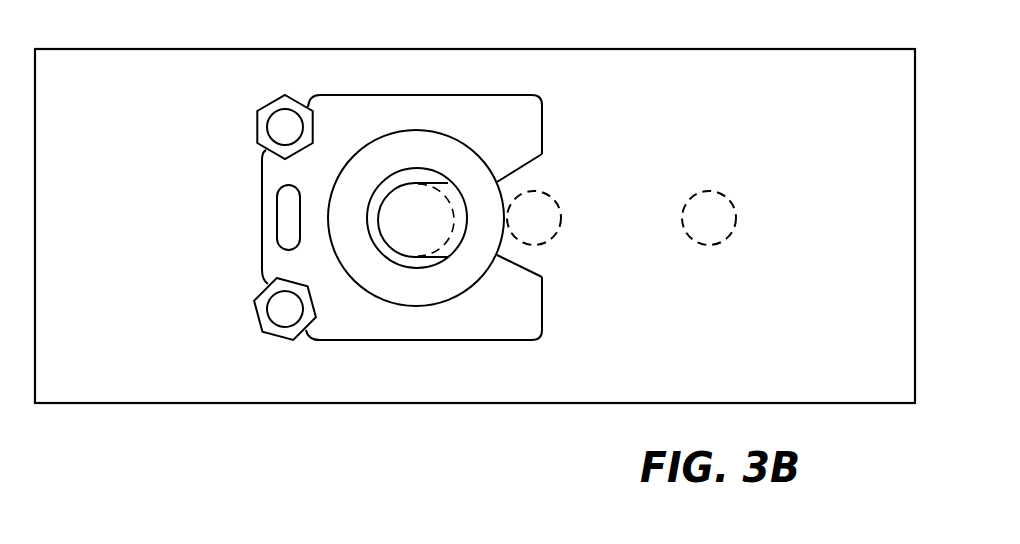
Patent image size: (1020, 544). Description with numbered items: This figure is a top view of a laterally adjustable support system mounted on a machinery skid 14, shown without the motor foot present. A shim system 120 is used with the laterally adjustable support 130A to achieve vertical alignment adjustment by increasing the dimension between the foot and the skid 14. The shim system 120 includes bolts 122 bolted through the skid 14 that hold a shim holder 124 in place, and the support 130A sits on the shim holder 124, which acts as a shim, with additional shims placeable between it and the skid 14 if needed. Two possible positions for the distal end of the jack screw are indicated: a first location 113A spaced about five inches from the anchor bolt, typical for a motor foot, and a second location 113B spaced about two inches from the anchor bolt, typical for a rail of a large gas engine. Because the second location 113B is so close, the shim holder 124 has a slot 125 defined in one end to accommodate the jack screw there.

The machinery skid 14 is at (78, 49).
The shim system 120 is at (361, 72).
The bolts 122 is at (259, 108).
The shim holder 124 is at (469, 341).
The slot 125 is at (534, 270).
The laterally adjustable support 130A is at (441, 122).
The first location 113A is at (718, 191).
The second location 113B is at (543, 191).